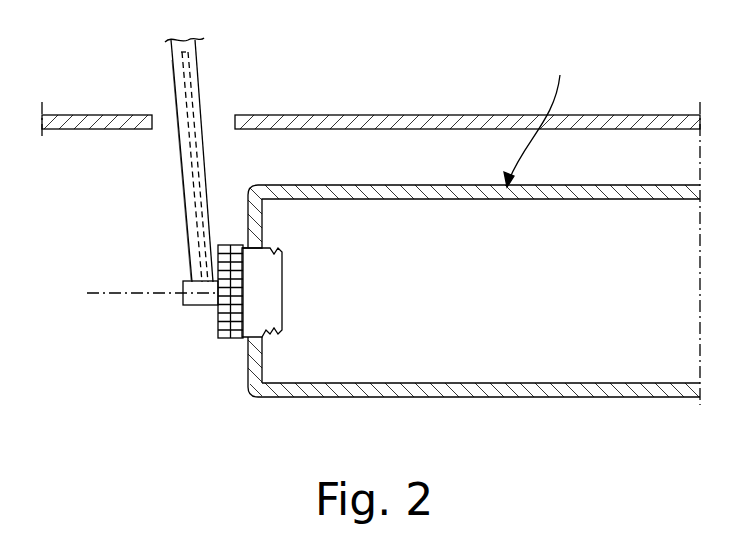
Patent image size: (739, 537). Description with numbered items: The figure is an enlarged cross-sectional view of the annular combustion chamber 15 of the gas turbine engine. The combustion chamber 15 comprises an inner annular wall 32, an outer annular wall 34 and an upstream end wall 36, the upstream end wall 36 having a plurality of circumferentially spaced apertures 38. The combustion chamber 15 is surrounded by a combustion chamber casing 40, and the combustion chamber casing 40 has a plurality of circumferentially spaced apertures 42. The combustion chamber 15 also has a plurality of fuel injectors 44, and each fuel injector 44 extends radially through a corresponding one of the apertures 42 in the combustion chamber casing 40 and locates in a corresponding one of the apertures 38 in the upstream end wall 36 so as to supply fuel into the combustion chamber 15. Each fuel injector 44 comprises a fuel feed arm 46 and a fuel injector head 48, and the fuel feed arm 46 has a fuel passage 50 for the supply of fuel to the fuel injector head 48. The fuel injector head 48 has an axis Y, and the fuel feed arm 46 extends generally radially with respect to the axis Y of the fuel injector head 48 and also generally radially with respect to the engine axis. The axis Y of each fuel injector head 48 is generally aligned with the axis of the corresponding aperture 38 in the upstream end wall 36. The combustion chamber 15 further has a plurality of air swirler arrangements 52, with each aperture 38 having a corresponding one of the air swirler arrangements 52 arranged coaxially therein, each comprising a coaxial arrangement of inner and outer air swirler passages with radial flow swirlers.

The combustion chamber 15 is at (541, 119).
The inner annular wall 32 is at (525, 398).
The outer annular wall 34 is at (560, 198).
The upstream end wall 36 is at (249, 199).
The aperture 38 is at (263, 330).
The combustion chamber casing 40 is at (643, 115).
The aperture 42 is at (233, 116).
The fuel injector 44 is at (193, 262).
The fuel feed arm 46 is at (182, 132).
The fuel injector head 48 is at (205, 300).
The fuel passage 50 is at (187, 70).
The air swirler arrangement 52 is at (266, 293).
The axis Y is at (112, 296).